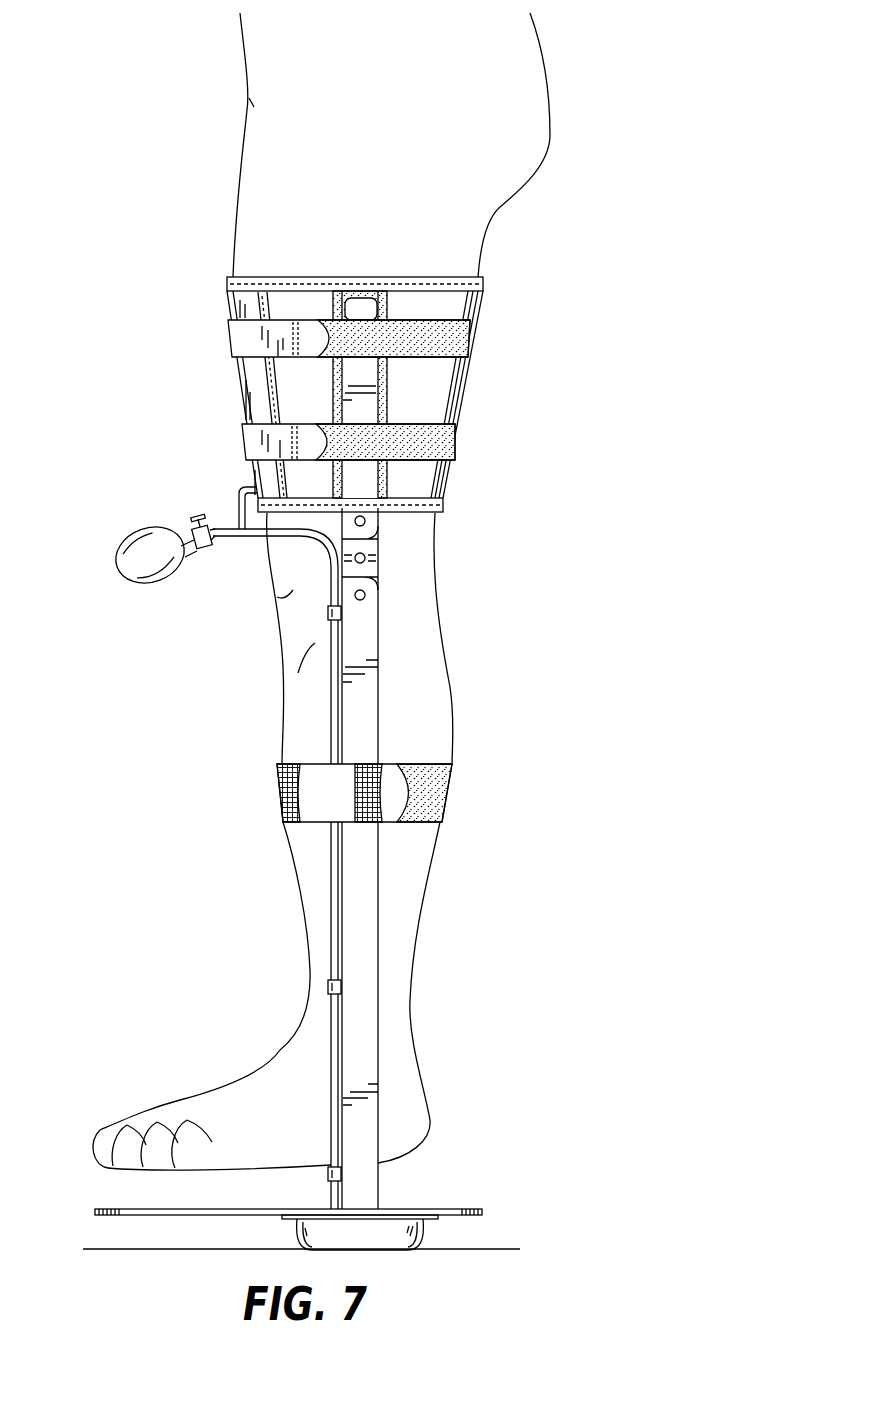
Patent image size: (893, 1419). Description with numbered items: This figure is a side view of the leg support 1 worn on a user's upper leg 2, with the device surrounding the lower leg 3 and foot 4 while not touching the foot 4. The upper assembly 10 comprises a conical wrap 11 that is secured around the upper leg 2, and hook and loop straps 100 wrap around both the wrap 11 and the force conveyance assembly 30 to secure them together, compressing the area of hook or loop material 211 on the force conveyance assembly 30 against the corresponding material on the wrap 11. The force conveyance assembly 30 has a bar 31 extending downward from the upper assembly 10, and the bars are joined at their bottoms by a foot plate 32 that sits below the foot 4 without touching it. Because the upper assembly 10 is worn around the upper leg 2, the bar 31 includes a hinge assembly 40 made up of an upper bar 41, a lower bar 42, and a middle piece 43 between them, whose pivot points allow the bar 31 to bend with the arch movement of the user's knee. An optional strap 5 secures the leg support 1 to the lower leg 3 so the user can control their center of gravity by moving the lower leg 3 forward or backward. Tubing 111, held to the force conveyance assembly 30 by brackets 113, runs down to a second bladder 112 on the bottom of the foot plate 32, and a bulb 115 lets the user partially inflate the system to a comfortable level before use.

The leg support 1 is at (118, 671).
The upper leg 2 is at (443, 257).
The lower leg 3 is at (428, 733).
The foot 4 is at (217, 1100).
The strap 5 is at (320, 773).
The upper assembly 10 is at (314, 353).
The wrap 11 is at (288, 300).
The force conveyance assembly 30 is at (440, 858).
The bar 31 is at (363, 713).
The foot plate 32 is at (148, 1218).
The hinge assembly 40 is at (402, 563).
The upper bar 41 is at (362, 496).
The lower bar 42 is at (360, 613).
The middle piece 43 is at (368, 543).
The hook and loop straps 100 is at (450, 337).
The tubing 111 is at (330, 1062).
The second bladder 112 is at (388, 1235).
The brackets 113 is at (327, 612).
The bulb 115 is at (145, 551).
The hook or loop material 211 is at (398, 370).